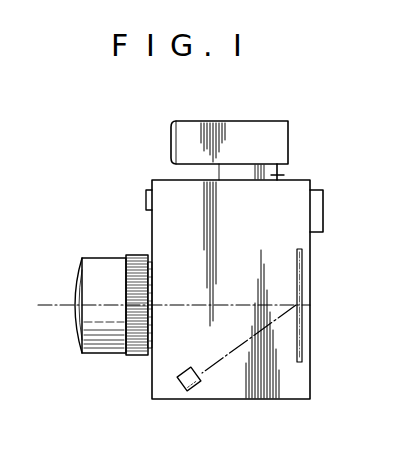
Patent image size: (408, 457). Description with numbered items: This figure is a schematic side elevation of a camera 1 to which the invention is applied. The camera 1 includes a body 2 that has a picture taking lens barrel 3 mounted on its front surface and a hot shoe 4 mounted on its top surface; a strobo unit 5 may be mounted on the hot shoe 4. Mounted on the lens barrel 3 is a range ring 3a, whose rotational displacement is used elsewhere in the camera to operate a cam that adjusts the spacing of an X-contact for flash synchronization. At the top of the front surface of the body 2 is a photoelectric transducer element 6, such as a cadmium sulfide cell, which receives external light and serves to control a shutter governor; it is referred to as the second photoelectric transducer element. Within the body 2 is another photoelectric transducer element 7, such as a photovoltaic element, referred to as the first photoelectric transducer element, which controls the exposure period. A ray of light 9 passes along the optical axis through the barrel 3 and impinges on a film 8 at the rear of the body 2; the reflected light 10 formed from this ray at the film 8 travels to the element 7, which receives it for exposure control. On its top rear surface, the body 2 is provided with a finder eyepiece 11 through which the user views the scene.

The camera 1 is at (139, 394).
The body 2 is at (153, 232).
The picture taking lens barrel 3 is at (90, 350).
The range ring 3a is at (134, 350).
The hot shoe 4 is at (282, 177).
The strobo unit 5 is at (251, 127).
The photoelectric transducer element 6 is at (148, 198).
The photoelectric transducer element 7 is at (185, 390).
The film 8 is at (303, 311).
The ray of light 9 is at (50, 305).
The reflected light 10 is at (212, 372).
The finder eyepiece 11 is at (320, 223).